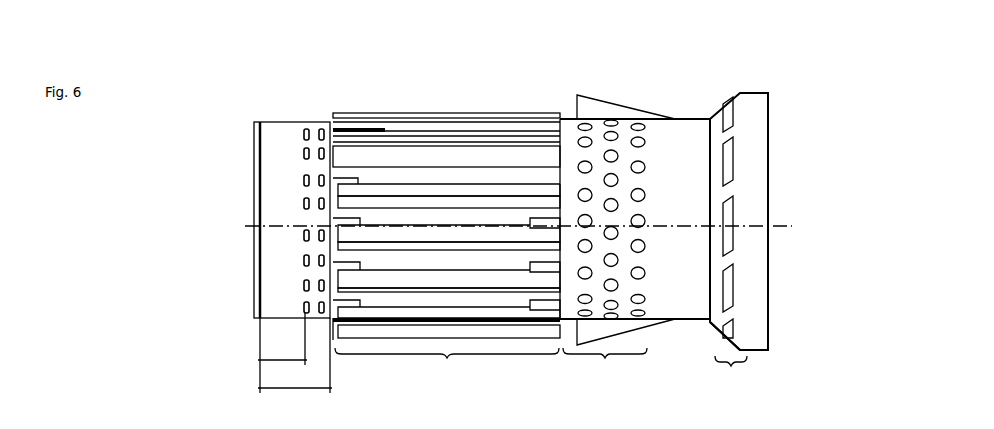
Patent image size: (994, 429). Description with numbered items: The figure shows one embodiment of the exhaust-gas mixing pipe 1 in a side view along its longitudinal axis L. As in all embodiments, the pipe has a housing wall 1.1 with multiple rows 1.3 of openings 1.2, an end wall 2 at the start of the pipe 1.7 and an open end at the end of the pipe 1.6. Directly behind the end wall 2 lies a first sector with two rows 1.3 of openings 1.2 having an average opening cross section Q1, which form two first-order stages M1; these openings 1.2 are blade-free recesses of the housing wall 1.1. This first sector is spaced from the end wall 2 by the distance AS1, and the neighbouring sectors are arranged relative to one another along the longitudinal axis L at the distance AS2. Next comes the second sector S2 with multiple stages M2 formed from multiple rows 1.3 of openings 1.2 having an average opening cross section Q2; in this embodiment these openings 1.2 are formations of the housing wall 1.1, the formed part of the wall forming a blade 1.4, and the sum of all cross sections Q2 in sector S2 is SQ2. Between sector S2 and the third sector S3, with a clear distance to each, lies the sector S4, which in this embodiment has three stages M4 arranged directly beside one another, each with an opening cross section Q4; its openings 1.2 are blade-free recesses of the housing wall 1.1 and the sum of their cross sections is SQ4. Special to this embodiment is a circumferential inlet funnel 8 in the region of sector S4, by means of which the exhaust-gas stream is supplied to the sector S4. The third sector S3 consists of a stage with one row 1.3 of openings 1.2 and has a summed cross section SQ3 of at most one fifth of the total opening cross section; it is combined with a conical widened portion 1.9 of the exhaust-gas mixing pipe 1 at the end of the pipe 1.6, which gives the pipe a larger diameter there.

The exhaust-gas mixing pipe 1 is at (392, 88).
The housing wall 1.1 is at (718, 221).
The openings 1.2 is at (548, 128).
The rows of openings 1.3 is at (476, 181).
The blade 1.4 is at (490, 113).
The end of the pipe 1.6 is at (750, 221).
The start of the pipe 1.7 is at (258, 219).
The conical widened portion 1.9 is at (715, 342).
The end wall 2 is at (257, 146).
The circumferential inlet funnel 8 is at (600, 93).
The longitudinal axis L is at (788, 226).
The first-order stages M1 is at (291, 181).
The stages of the second sector M2 is at (446, 95).
The stages of the fourth sector M4 is at (661, 99).
The average opening cross section of the first sector Q1 is at (307, 120).
The average opening cross section of the second sector Q2 is at (440, 105).
The opening cross section of the fourth sector Q4 is at (642, 118).
The distance of the first sector from the end wall AS1 is at (262, 360).
The distance between sectors AS2 is at (266, 388).
The second sector S2 is at (447, 377).
The third sector S3 is at (737, 384).
The fourth sector S4 is at (604, 370).
The sum of opening cross sections of the second sector SQ2 is at (447, 360).
The sum of opening cross sections of the third sector SQ3 is at (731, 368).
The sum of opening cross sections of the fourth sector SQ4 is at (605, 360).